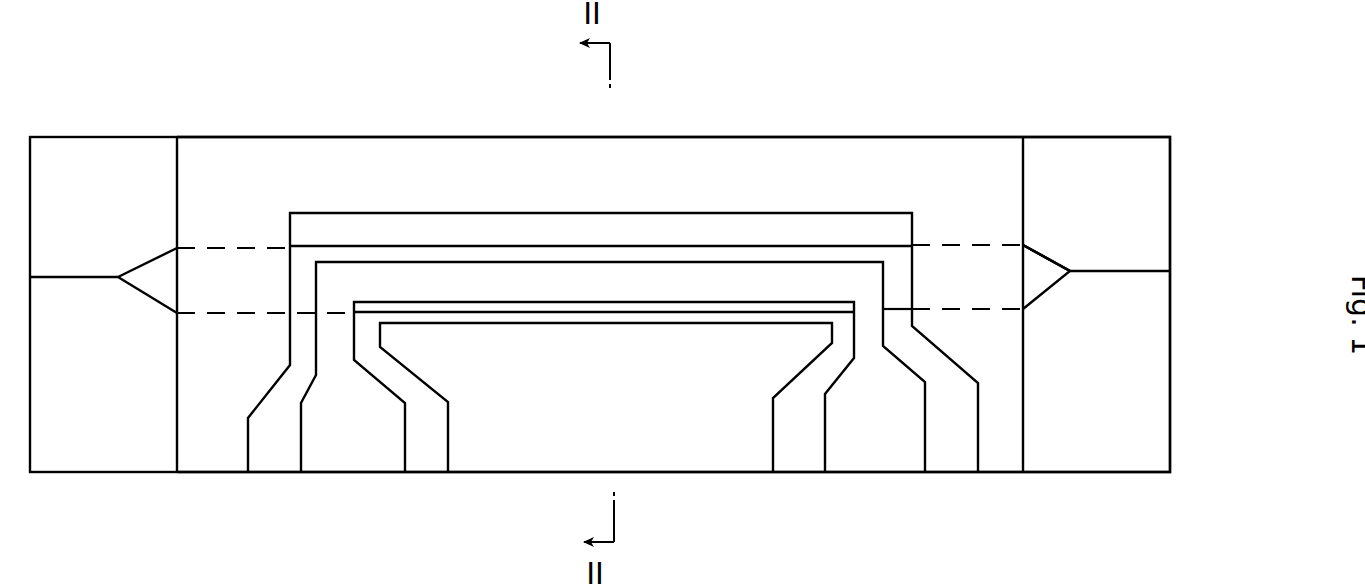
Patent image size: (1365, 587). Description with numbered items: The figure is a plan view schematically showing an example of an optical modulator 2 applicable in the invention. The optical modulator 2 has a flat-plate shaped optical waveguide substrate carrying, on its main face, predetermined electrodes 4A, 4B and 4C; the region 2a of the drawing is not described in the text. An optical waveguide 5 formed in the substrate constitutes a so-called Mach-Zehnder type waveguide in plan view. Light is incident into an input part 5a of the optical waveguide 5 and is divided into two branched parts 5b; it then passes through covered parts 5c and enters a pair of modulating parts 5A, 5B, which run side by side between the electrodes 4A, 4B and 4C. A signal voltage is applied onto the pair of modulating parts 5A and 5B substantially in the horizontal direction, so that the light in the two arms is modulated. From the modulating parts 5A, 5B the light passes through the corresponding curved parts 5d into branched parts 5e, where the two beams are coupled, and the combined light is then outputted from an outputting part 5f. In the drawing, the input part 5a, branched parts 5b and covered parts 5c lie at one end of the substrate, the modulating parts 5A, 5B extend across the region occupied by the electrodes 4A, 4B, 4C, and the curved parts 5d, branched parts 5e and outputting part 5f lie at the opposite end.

The optical modulator 2 is at (1095, 145).
The substrate side portion 2a is at (1148, 403).
The electrode 4A is at (765, 148).
The electrode 4B is at (636, 267).
The electrode 4C is at (678, 453).
The optical waveguide 5 is at (1135, 256).
The modulating part 5A is at (862, 245).
The modulating part 5B is at (758, 313).
The input part 5a is at (68, 280).
The branched part 5b is at (143, 263).
The covered part 5c is at (175, 248).
The curved part 5d is at (1023, 243).
The branched part 5e is at (1053, 258).
The outputting part 5f is at (1132, 272).